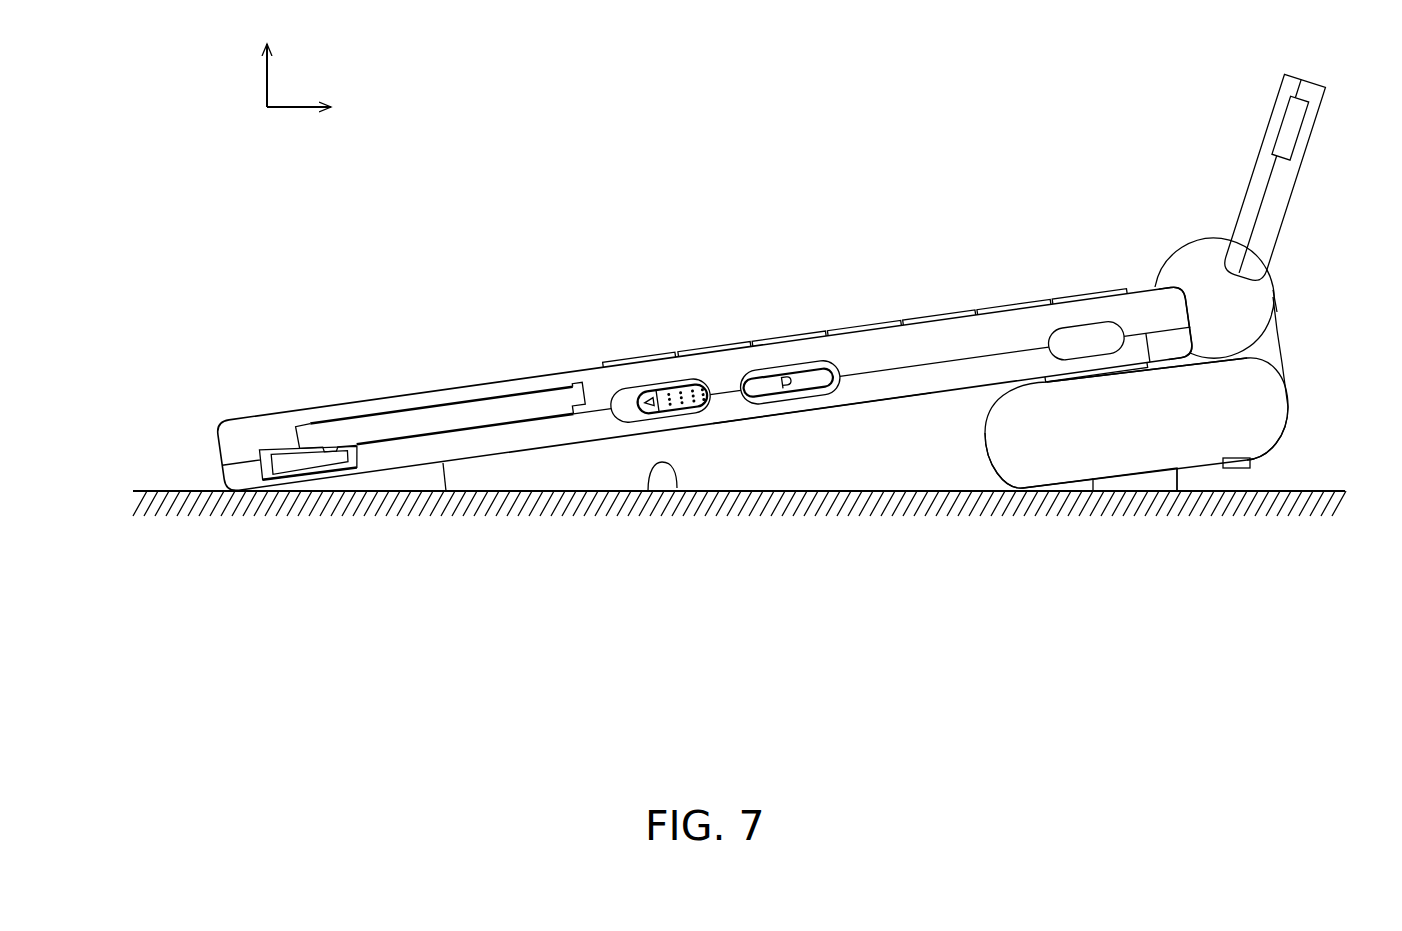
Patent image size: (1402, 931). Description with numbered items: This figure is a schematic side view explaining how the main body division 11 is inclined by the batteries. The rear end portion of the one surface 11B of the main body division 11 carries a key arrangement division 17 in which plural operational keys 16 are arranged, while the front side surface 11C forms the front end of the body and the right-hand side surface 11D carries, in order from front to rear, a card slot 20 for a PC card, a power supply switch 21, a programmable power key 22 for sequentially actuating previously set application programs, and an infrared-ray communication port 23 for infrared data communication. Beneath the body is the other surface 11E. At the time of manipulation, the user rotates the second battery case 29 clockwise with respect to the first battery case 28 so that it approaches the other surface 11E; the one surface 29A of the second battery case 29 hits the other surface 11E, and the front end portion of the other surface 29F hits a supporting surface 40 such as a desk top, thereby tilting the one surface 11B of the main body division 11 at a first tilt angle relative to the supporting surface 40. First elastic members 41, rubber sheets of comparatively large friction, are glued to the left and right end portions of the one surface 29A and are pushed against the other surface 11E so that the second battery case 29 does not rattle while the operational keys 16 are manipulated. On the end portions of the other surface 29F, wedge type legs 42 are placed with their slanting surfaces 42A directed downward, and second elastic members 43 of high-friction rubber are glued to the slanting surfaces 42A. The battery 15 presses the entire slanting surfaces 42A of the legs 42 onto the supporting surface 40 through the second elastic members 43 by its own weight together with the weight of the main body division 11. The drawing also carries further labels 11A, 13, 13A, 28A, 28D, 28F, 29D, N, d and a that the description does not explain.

The main body division 11 is at (228, 458).
The rear end portion of body 11A is at (1197, 312).
The one surface of the main body division 11B is at (467, 383).
The front side surface of the main body division 11C is at (212, 446).
The right-hand side surface of the main body division 11D is at (917, 385).
The other surface of the main body division 11E is at (783, 418).
The stylus pen 13 is at (1308, 148).
The stylus clip 13A is at (1257, 150).
The battery 15 is at (984, 466).
The operational keys 16 is at (936, 318).
The key arrangement division 17 is at (789, 337).
The card slot 20 is at (527, 412).
The power supply switch 21 is at (707, 413).
The programmable power key 22 is at (823, 387).
The infrared-ray communication port 23 is at (1082, 340).
The first battery case 28 is at (1280, 343).
The hinge lower portion 28A is at (1282, 366).
The hinge side portion 28D is at (1282, 306).
The hinge lower end 28F is at (1271, 454).
The second battery case 29 is at (1047, 382).
The one surface of the second battery case 29A is at (1150, 358).
The stand inner portion 29D is at (1118, 450).
The other surface of the second battery case 29F is at (1220, 474).
The supporting surface 40 is at (662, 462).
The first elastic members 41 is at (1053, 472).
The wedge type legs 42 is at (1175, 475).
The slanting surfaces 42A is at (1155, 485).
The second elastic members 43 is at (1125, 477).
The contact point N is at (447, 477).
The upward direction d is at (265, 80).
The forward direction a is at (297, 105).